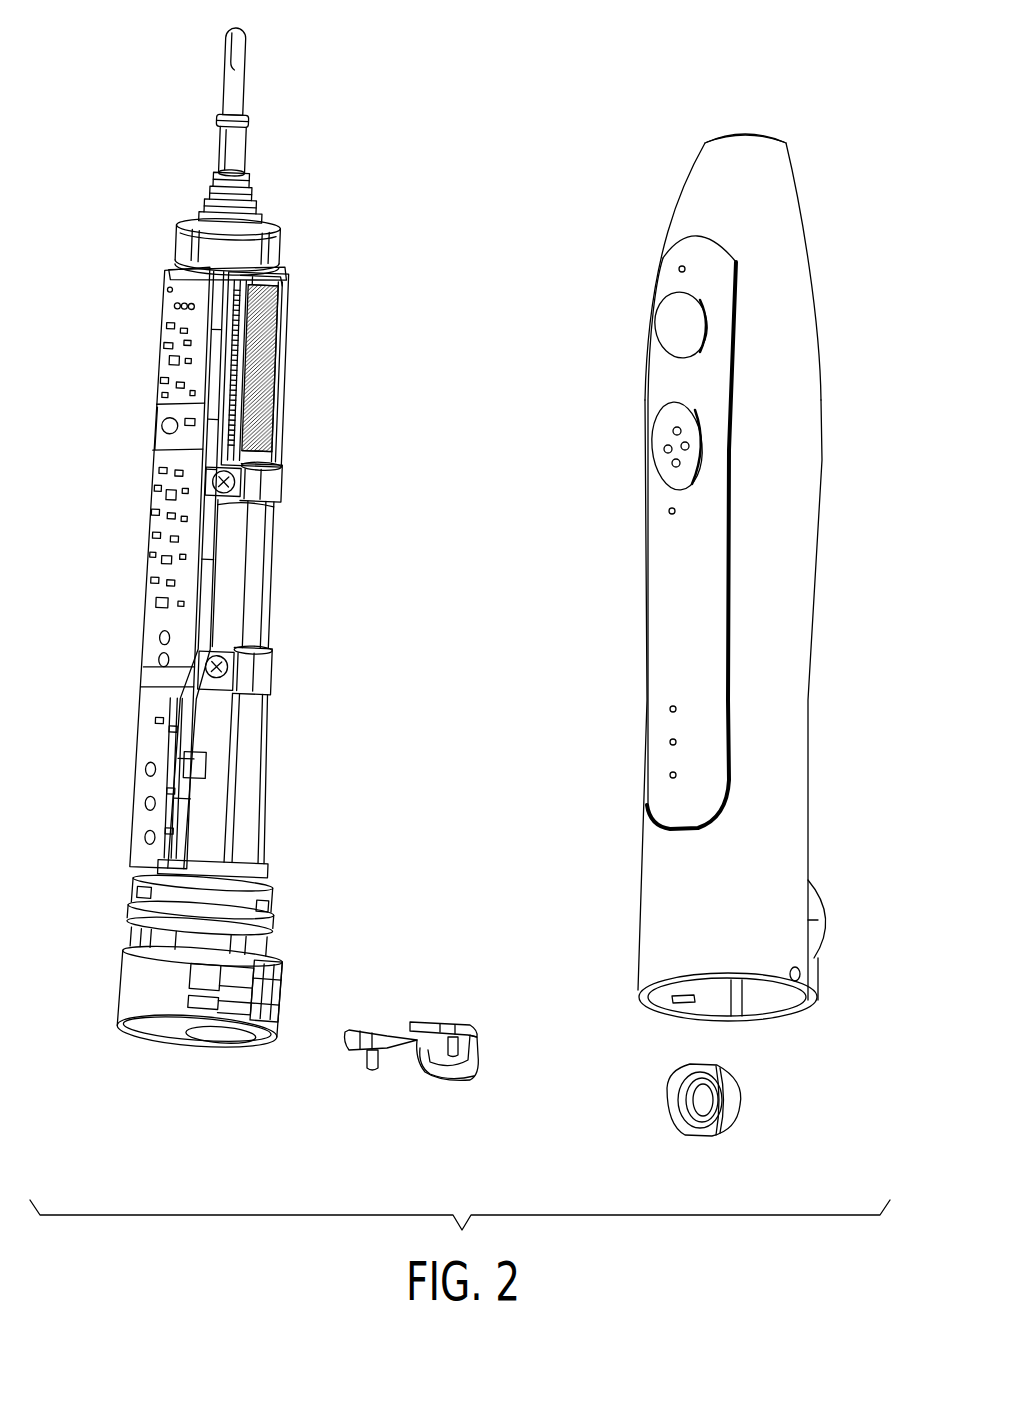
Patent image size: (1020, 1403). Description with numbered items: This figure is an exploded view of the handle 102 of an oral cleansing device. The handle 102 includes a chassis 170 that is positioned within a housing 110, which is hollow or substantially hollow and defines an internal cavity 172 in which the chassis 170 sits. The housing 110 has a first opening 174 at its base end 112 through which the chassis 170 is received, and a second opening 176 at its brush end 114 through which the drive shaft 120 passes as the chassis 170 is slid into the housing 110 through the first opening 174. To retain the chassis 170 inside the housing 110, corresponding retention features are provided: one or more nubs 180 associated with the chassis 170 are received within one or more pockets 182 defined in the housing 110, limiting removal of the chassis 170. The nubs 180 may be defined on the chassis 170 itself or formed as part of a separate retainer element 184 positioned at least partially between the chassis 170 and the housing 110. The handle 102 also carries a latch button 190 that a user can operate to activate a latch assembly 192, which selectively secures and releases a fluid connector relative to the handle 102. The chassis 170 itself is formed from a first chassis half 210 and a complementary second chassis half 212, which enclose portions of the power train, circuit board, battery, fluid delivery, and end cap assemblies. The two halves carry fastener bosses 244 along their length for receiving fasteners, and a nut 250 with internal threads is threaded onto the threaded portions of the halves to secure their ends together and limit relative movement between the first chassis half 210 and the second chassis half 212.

The handle 102 is at (535, 57).
The housing 110 is at (731, 578).
The base end 112 is at (668, 905).
The brush end 114 is at (772, 190).
The drive shaft 120 is at (238, 95).
The chassis 170 is at (268, 600).
The internal cavity 172 is at (713, 1000).
The first opening 174 is at (763, 1018).
The second opening 176 is at (750, 108).
The nubs 180 is at (468, 1030).
The pockets 182 is at (683, 1010).
The retainer element 184 is at (462, 1082).
The latch button 190 is at (738, 1122).
The latch assembly 192 is at (290, 987).
The first chassis half 210 is at (208, 736).
The second chassis half 212 is at (258, 770).
The fastener bosses 244 is at (268, 488).
The nut 250 is at (176, 256).